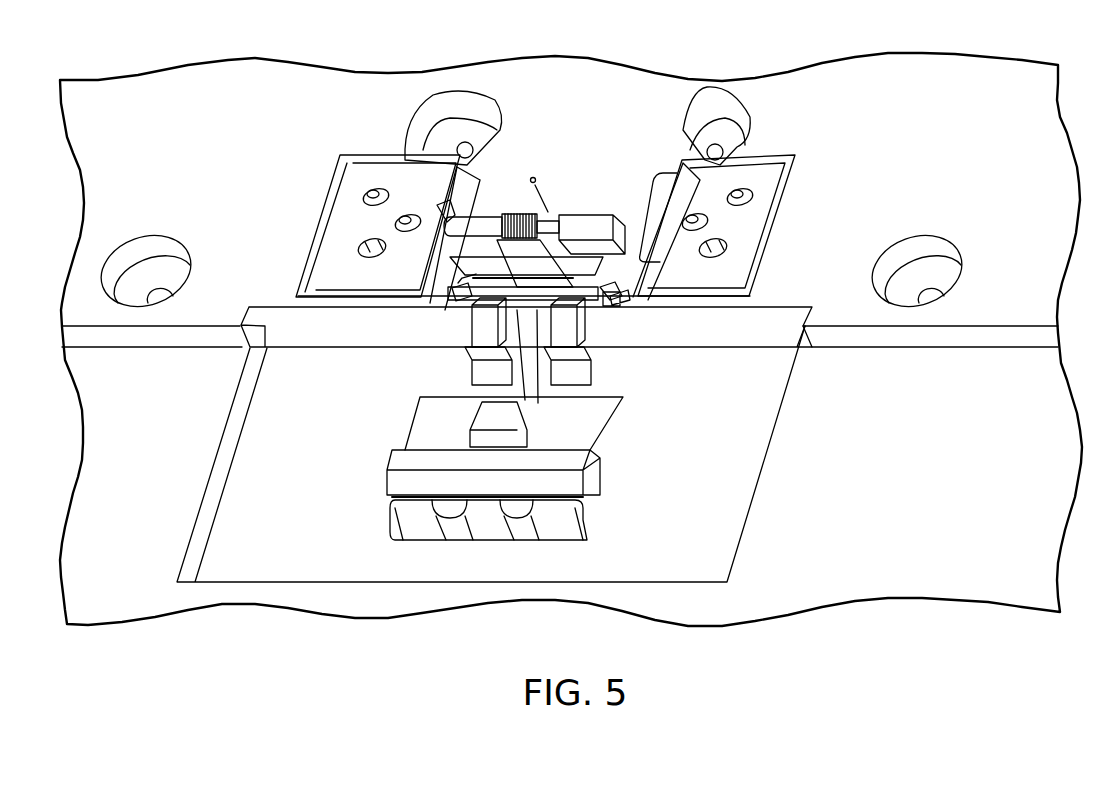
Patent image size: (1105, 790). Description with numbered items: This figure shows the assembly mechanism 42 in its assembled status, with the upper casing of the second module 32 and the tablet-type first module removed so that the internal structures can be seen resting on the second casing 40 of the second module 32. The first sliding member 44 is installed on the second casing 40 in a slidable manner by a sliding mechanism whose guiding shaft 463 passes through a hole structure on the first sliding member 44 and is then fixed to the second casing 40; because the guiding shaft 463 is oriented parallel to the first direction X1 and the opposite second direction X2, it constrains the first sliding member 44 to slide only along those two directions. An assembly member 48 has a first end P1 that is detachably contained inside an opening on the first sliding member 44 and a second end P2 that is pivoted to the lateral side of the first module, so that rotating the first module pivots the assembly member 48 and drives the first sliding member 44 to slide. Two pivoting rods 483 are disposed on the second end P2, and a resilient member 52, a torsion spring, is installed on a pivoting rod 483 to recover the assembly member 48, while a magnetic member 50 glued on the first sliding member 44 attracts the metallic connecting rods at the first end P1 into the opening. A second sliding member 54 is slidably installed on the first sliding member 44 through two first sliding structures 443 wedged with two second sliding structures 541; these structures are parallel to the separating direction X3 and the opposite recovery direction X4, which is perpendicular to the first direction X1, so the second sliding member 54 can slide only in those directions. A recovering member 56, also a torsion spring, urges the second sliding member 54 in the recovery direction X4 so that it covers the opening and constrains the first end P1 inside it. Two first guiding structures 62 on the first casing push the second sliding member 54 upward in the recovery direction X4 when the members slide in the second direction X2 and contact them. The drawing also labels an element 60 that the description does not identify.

The second module 32 is at (236, 521).
The second casing 40 is at (273, 318).
The assembly mechanism 42 is at (371, 376).
The first sliding member 44 is at (622, 247).
The first sliding structures 443 is at (465, 275).
The assembly member 48 is at (450, 238).
The pivoting rods 483 is at (438, 205).
The magnetic member 50 is at (597, 215).
The resilient member 52 is at (505, 190).
The second sliding member 54 is at (460, 362).
The second sliding structures 541 is at (460, 300).
The recovering member 56 is at (612, 298).
The support post 60 is at (448, 354).
The first guiding structures 62 is at (505, 357).
The guiding shaft 463 is at (523, 397).
The first end P1 is at (468, 368).
The second end P2 is at (533, 176).
The first direction X1 is at (975, 432).
The second direction X2 is at (967, 442).
The separating direction X3 is at (959, 432).
The recovery direction X4 is at (963, 444).